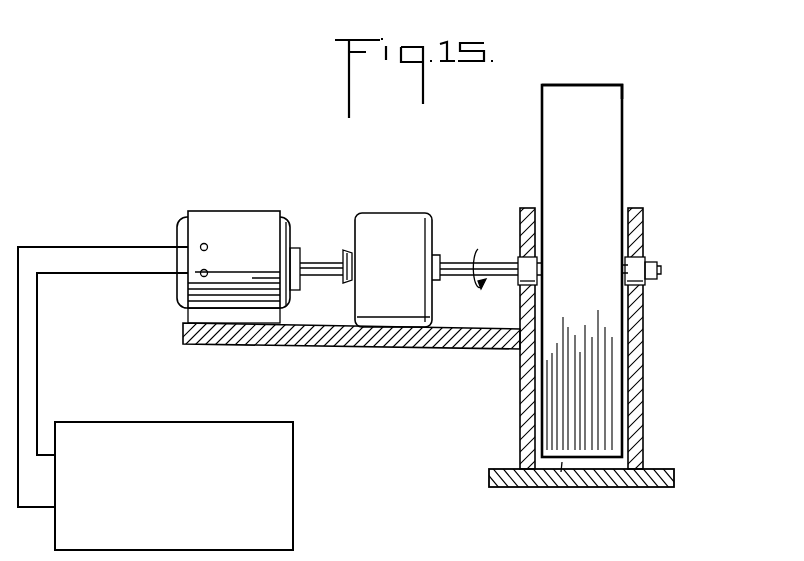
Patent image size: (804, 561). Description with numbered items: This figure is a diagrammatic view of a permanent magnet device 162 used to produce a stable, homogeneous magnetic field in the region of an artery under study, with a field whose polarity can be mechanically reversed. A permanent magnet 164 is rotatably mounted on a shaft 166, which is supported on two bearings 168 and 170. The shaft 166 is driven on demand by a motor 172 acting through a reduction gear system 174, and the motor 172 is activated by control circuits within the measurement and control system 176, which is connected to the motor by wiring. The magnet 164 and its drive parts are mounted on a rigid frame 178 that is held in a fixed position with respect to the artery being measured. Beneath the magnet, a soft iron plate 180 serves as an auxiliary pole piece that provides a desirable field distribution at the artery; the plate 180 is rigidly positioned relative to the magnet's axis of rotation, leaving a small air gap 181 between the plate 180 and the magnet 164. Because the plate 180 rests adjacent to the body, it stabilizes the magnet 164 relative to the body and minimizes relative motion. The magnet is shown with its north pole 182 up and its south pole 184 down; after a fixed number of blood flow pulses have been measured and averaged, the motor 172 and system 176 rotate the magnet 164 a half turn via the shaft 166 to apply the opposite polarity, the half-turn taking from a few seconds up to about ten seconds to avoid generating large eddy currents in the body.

The permanent magnet device 162 is at (665, 174).
The permanent magnet 164 is at (600, 248).
The shaft 166 is at (657, 278).
The bearing 168 is at (520, 262).
The bearing 170 is at (640, 263).
The motor 172 is at (244, 211).
The reduction gear system 174 is at (389, 213).
The measurement and control system 176 is at (111, 421).
The rigid frame 178 is at (462, 377).
The soft iron plate 180 is at (588, 489).
The air gap 181 is at (550, 487).
The north pole 182 is at (613, 99).
The south pole 184 is at (608, 431).